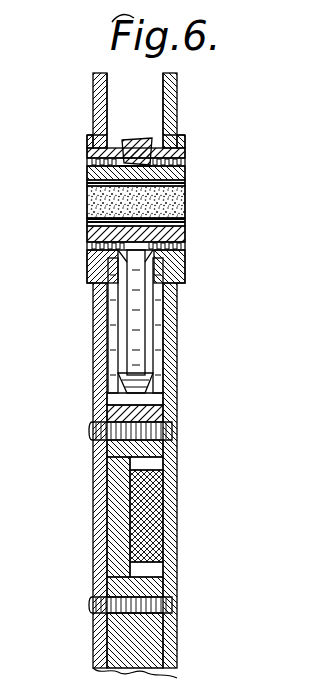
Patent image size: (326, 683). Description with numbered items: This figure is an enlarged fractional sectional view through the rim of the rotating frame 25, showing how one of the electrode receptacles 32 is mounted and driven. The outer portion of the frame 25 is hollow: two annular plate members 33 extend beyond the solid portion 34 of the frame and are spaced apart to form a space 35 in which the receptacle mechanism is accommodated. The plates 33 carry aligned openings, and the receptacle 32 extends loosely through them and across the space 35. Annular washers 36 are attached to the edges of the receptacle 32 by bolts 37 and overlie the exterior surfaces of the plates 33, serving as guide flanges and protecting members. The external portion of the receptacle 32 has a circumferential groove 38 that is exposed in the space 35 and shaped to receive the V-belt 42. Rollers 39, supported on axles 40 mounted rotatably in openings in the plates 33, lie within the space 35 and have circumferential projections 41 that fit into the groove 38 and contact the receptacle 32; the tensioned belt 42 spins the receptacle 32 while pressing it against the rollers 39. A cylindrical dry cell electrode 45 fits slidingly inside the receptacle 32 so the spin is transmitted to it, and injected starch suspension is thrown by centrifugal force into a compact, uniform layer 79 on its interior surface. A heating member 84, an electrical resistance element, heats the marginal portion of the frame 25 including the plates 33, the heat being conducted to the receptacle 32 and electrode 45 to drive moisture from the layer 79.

The frame 25 is at (184, 648).
The receptacle 32 is at (158, 145).
The annular plate member 33 is at (173, 523).
The solid portion 34 is at (97, 647).
The space 35 is at (155, 397).
The washer 36 is at (185, 136).
The bolt 37 is at (87, 160).
The circumferential groove 38 is at (87, 178).
The roller 39 is at (157, 367).
The axle 40 is at (173, 317).
The circumferential projection 41 is at (137, 357).
The V-belt 42 is at (143, 140).
The dry cell electrode 45 is at (185, 182).
The layer 79 is at (88, 206).
The heating member 84 is at (152, 500).